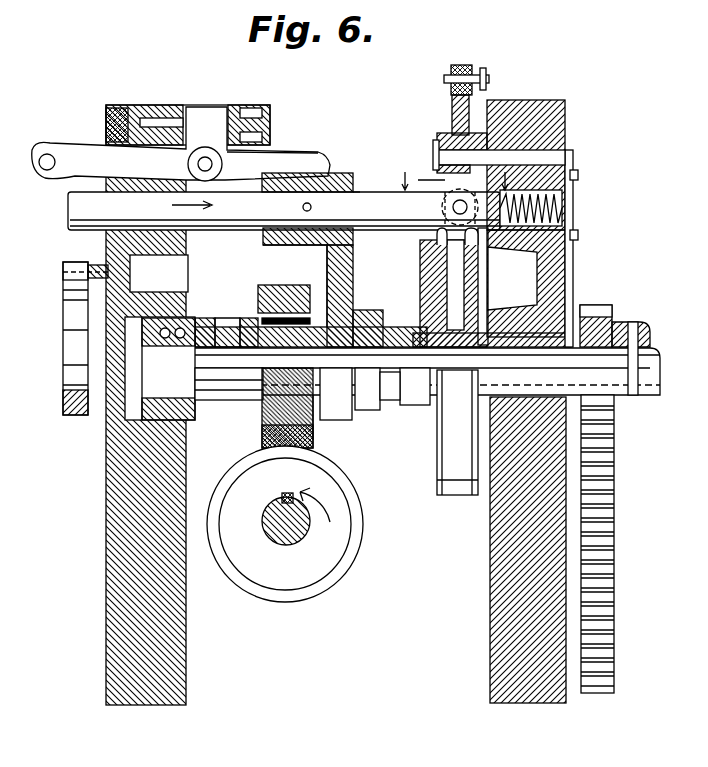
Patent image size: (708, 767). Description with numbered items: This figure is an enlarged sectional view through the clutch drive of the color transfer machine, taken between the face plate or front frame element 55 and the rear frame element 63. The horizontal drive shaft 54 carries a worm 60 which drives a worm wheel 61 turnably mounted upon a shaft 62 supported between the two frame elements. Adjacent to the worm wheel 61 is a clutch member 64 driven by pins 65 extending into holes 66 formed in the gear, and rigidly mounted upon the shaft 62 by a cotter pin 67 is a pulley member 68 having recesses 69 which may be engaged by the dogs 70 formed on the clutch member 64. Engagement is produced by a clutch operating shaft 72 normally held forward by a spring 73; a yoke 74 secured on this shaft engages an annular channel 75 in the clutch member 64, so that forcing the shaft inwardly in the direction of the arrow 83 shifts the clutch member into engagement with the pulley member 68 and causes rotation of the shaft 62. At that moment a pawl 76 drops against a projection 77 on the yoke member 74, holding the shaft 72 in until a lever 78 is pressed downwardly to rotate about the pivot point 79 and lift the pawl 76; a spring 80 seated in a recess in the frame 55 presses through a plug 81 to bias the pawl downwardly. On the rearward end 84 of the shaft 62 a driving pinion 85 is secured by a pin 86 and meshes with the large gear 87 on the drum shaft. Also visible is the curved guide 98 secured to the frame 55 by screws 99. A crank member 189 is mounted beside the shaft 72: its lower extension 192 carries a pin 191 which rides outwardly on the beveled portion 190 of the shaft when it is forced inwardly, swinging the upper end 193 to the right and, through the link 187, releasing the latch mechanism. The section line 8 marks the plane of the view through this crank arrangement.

The section line 8— 8 is at (454, 181).
The drive shaft 54 is at (278, 532).
The front frame element 55 is at (106, 486).
The worm 60 is at (362, 520).
The worm wheel 61 is at (262, 414).
The shaft 62 is at (236, 344).
The rear frame element 63 is at (490, 576).
The clutch member 64 is at (318, 428).
The pins 65 is at (322, 325).
The holes 66 is at (258, 312).
The cotter pin 67 is at (426, 338).
The pulley member 68 is at (444, 498).
The recesses 69 is at (404, 392).
The dogs 70 is at (376, 408).
The clutch operating shaft 72 is at (364, 196).
The spring 73 is at (566, 207).
The yoke 74 is at (325, 275).
The annular channel 75 is at (344, 402).
The pawl 76 is at (284, 158).
The projection 77 is at (327, 173).
The lever 78 is at (68, 148).
The pivot point 79 is at (207, 160).
The spring 80 is at (127, 110).
The plug 81 is at (164, 118).
The arrow 83 is at (284, 211).
The rearward end of shaft 84 is at (655, 358).
The driving pinion 85 is at (594, 316).
The pin 86 is at (630, 333).
The large gear 87 is at (610, 608).
The curved guide 98 is at (68, 316).
The screws 99 is at (63, 273).
The link 187 is at (470, 74).
The crank member 189 is at (452, 115).
The beveled portion 190 is at (440, 208).
The pin 191 is at (440, 236).
The lower extension 192 is at (440, 152).
The upper end 193 is at (456, 68).